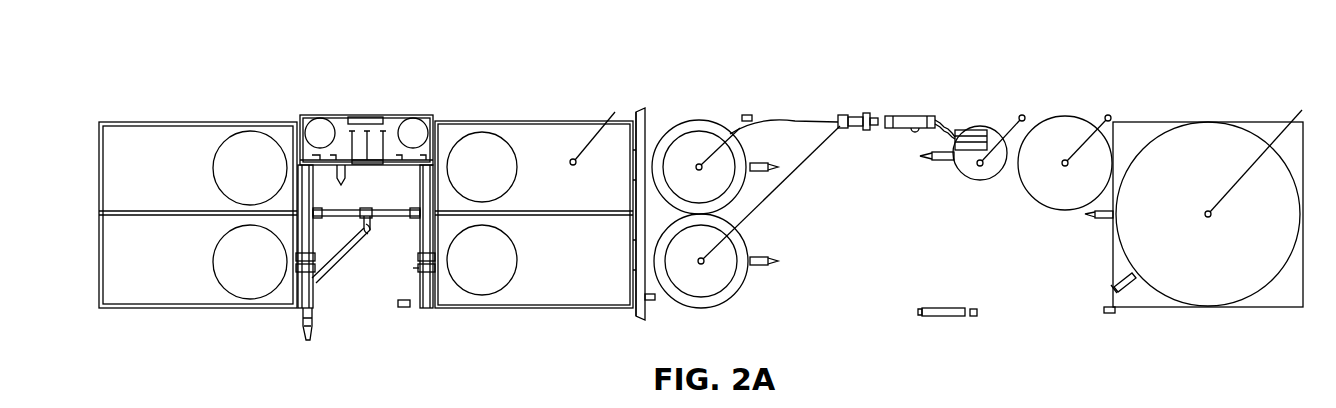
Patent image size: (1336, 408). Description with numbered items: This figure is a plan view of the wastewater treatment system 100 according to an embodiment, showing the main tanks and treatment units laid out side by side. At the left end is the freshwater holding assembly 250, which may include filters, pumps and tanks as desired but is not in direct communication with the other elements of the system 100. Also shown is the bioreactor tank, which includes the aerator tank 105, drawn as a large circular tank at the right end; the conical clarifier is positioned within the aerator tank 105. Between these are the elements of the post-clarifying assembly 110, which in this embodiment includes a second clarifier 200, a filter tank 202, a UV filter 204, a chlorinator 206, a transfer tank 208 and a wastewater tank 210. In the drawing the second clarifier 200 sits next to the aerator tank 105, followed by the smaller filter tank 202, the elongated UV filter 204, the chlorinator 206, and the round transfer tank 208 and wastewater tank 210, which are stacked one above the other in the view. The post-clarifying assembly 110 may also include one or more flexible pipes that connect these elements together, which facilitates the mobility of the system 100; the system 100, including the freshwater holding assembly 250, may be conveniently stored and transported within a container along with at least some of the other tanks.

The wastewater treatment system 100 is at (256, 76).
The freshwater holding assembly 250 is at (462, 68).
The post-clarifying assembly 110 is at (950, 66).
The aerator tank 105 is at (1208, 138).
The second clarifier 200 is at (1062, 215).
The filter tank 202 is at (980, 180).
The UV filter 204 is at (885, 132).
The chlorinator 206 is at (840, 115).
The transfer tank 208 is at (700, 121).
The wastewater tank 210 is at (720, 302).